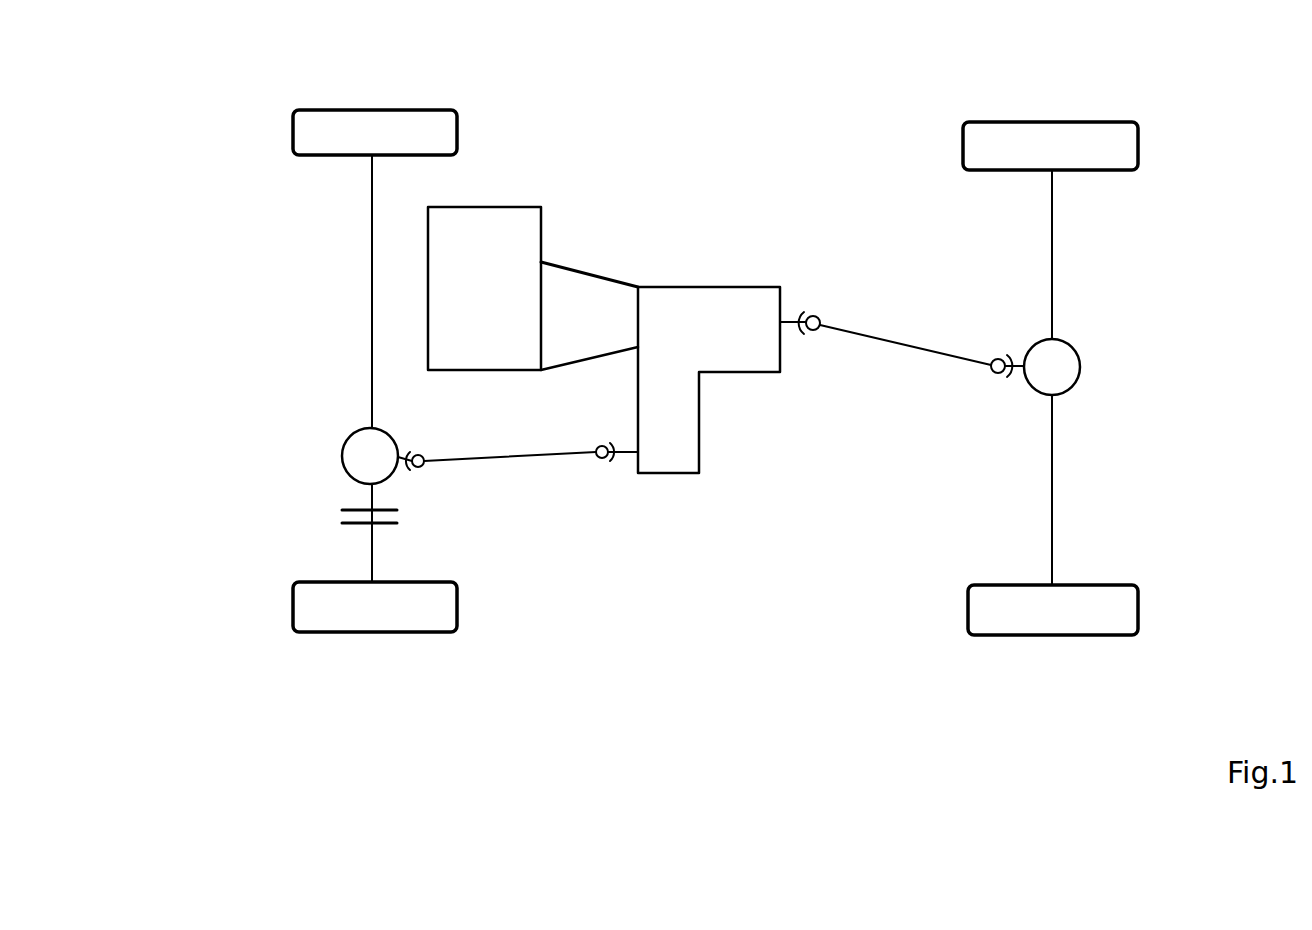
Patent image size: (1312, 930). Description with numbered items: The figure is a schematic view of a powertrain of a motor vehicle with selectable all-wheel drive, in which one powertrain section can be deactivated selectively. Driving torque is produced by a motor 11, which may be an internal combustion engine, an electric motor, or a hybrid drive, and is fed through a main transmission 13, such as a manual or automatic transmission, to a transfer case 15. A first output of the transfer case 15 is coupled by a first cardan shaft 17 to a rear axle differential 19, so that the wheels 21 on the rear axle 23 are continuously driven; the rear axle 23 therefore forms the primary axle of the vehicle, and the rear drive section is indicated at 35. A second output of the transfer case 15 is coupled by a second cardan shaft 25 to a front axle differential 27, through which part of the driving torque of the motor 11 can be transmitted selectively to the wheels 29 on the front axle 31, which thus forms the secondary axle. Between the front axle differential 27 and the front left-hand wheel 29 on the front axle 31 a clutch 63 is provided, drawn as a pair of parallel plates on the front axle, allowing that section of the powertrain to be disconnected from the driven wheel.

The motor 11 is at (497, 304).
The main transmission 13 is at (596, 330).
The transfer case 15 is at (708, 346).
The first cardan shaft 17 is at (912, 344).
The rear axle differential 19 is at (1082, 350).
The wheels 21 is at (1103, 120).
The rear axle 23 is at (1100, 266).
The second cardan shaft 25 is at (516, 462).
The front axle differential 27 is at (342, 456).
The wheels 29 is at (322, 108).
The front axle 31 is at (356, 338).
The rear axle drive train 35 is at (993, 553).
The clutch 63 is at (318, 513).